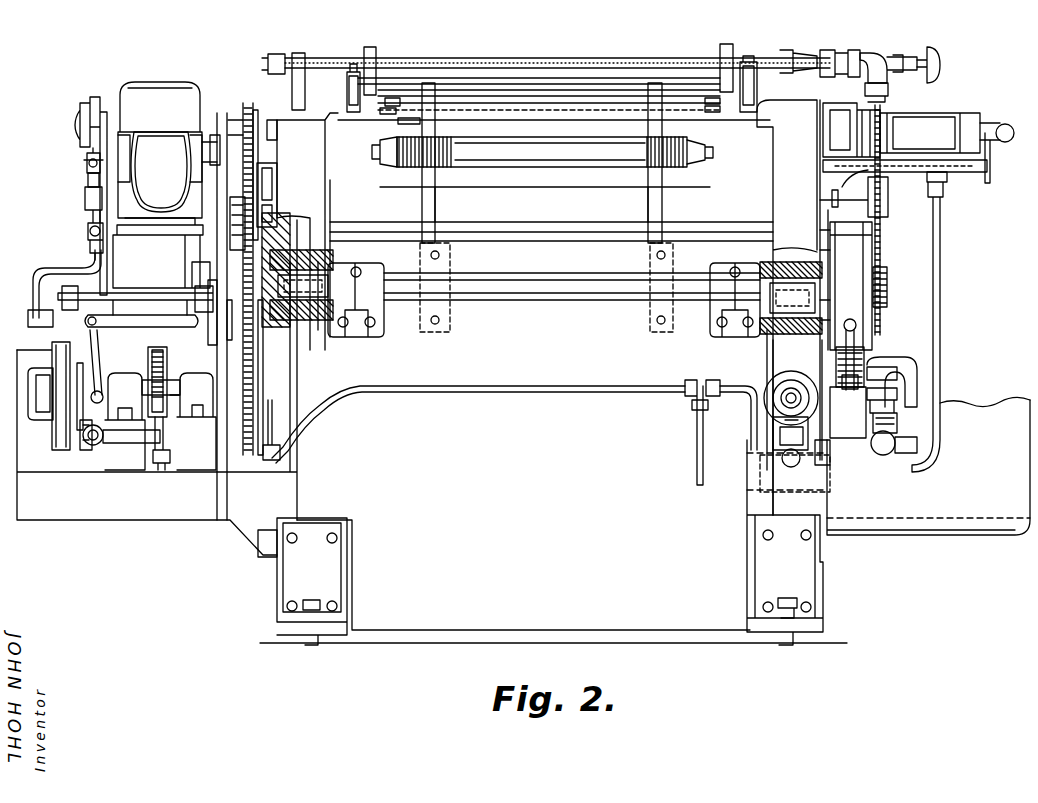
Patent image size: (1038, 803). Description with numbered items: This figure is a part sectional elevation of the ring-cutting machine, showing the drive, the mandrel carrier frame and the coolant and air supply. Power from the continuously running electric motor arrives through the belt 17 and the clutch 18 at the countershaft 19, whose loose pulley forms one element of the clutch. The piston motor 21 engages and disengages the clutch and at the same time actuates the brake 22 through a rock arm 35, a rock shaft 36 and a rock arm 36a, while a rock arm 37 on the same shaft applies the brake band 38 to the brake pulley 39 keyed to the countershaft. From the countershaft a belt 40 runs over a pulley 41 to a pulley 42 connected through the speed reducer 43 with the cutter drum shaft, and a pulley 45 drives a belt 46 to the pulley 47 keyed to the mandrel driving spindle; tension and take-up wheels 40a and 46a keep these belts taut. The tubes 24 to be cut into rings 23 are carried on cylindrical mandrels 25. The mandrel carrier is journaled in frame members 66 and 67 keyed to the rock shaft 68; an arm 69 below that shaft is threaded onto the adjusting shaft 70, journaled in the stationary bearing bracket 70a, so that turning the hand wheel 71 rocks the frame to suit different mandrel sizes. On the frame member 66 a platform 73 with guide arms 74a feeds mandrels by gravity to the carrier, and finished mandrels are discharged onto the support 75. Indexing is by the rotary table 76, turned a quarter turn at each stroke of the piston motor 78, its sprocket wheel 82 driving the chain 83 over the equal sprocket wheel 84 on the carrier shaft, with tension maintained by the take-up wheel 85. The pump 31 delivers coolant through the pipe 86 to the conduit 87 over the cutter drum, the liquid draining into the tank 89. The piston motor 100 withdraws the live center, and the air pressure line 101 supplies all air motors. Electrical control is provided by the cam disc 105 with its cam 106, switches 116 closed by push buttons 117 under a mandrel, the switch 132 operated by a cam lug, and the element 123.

The belt 17 is at (52, 357).
The clutch 18 is at (86, 368).
The countershaft 19 is at (180, 396).
The piston motor 21 is at (110, 308).
The brake 22 is at (170, 347).
The rings 23 is at (575, 124).
The tubes 24 is at (518, 124).
The mandrels 25 is at (382, 158).
The pump 31 is at (912, 445).
The rock arm 35 is at (96, 335).
The rock shaft 36 is at (95, 447).
The rock arm 36a is at (97, 410).
The rock arm 37 is at (133, 440).
The brake band 38 is at (156, 352).
The brake pulley 39 is at (170, 441).
The belt 40 is at (230, 216).
The tension and take-up wheel 40a is at (218, 340).
The pulley 41 is at (243, 450).
The pulley 42 is at (220, 115).
The speed reducer 43 is at (166, 168).
The pulley 45 is at (245, 455).
The belt 46 is at (250, 286).
The tension and take-up wheel 46a is at (277, 197).
The pulley 47 is at (254, 112).
The frame member 66 is at (803, 181).
The frame member 67 is at (306, 180).
The rock shaft 68 is at (590, 262).
The arm 69 is at (784, 354).
The adjusting shaft 70 is at (800, 432).
The bearing bracket 70a is at (813, 460).
The hand wheel 71 is at (793, 385).
The platform 73 is at (492, 100).
The guide arms 74a is at (371, 50).
The support 75 is at (435, 172).
The rotary table 76 is at (870, 252).
The piston motor 78 is at (840, 366).
The sprocket wheel 82 is at (887, 285).
The chain 83 is at (882, 232).
The sprocket wheel 84 is at (880, 128).
The tension and take-up wheel 85 is at (888, 205).
The pipe 86 is at (888, 91).
The conduit 87 is at (570, 65).
The tank 89 is at (566, 508).
The piston motor 100 is at (920, 132).
The air pressure line 101 is at (698, 444).
The cam disc 105 is at (97, 105).
The cam 106 is at (88, 177).
The switches 116 is at (352, 90).
The push buttons 117 is at (404, 120).
The valve block 123 is at (87, 200).
The switch 132 is at (87, 156).